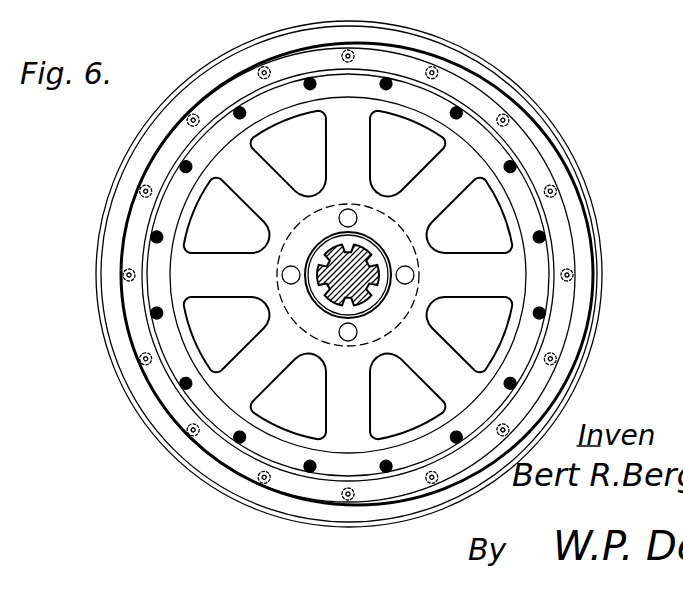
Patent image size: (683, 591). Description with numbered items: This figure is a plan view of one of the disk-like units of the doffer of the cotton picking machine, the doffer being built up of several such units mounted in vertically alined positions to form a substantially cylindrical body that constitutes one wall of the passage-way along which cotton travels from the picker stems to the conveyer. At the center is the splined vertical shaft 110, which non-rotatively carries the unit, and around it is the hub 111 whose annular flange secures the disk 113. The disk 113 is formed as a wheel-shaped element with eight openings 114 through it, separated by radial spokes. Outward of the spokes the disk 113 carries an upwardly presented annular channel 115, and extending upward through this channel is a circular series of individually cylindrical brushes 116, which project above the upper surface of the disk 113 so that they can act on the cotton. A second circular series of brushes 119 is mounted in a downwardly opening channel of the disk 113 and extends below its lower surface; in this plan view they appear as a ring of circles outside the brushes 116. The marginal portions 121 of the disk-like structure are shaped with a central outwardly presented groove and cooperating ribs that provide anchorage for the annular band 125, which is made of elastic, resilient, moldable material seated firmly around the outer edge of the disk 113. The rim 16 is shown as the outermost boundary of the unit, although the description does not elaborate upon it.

The wheel rim 16 is at (97, 295).
The vertical shaft 110 is at (322, 261).
The hub 111 is at (313, 290).
The disk 113 is at (460, 131).
The openings 114 is at (223, 193).
The annular channel 115 is at (173, 183).
The brushes 116 is at (402, 72).
The brushes 119 is at (552, 188).
The marginal portions 121 is at (135, 228).
The annular bands 125 is at (598, 216).